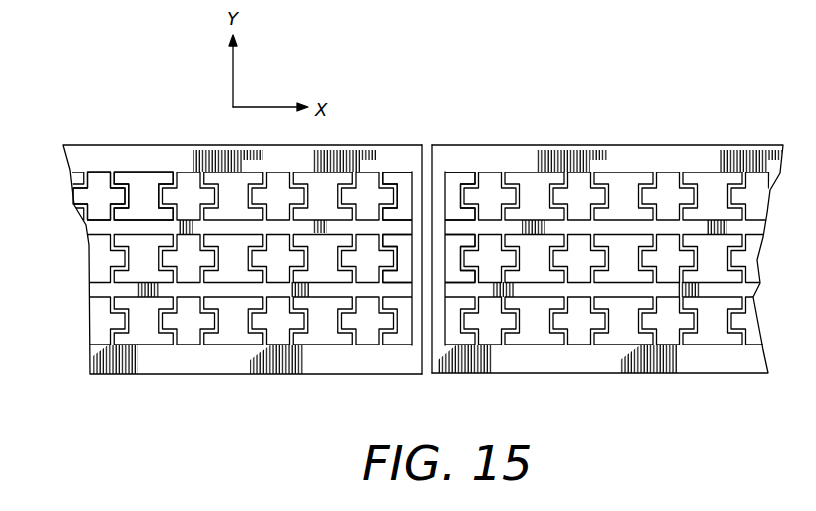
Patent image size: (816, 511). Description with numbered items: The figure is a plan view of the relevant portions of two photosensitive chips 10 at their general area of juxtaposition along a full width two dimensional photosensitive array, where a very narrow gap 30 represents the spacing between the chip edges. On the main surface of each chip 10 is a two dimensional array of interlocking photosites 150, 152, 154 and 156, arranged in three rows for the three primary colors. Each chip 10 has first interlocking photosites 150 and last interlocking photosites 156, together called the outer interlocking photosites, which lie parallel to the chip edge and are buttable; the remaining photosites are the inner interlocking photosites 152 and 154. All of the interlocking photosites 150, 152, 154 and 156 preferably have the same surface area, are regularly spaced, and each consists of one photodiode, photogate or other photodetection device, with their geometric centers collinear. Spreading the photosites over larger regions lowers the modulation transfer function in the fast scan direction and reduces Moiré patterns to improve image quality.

The photosensitive chip 10 is at (76, 145).
The gap 30 is at (428, 147).
The inner interlocking photosite 152 is at (168, 147).
The inner interlocking photosite 154 is at (108, 145).
The last interlocking photosite 156 is at (413, 220).
The first interlocking photosite 150 is at (460, 217).